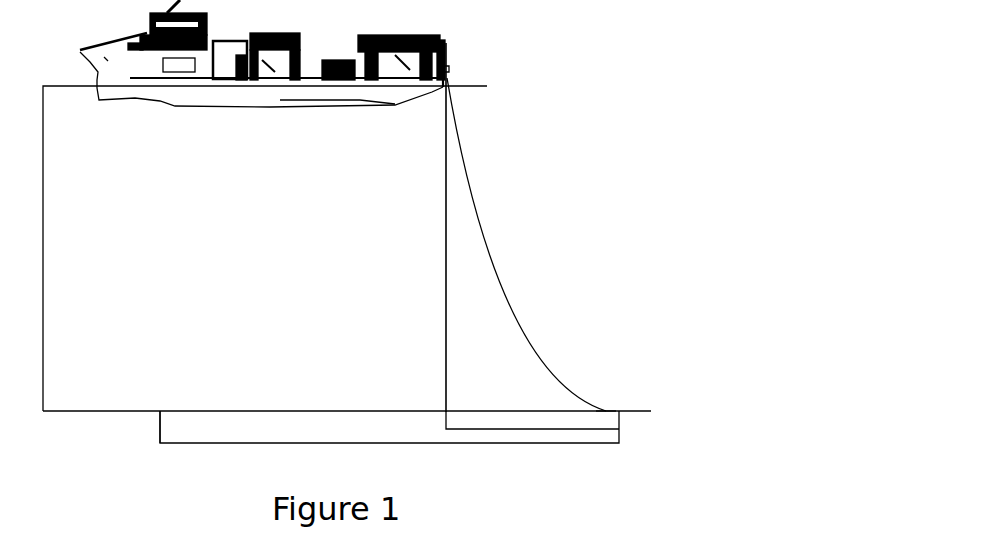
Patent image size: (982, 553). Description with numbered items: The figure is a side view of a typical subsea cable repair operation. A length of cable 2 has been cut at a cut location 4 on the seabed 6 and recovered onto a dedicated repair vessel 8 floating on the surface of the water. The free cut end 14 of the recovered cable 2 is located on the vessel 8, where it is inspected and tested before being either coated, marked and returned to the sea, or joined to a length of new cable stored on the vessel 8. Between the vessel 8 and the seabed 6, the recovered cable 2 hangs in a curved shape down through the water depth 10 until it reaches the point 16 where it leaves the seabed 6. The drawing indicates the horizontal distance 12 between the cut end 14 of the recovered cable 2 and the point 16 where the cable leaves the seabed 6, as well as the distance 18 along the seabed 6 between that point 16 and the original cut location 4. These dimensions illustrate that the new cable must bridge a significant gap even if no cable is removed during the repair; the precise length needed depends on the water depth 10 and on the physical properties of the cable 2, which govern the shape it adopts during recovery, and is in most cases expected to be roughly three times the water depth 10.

The cable 2 is at (496, 241).
The cut location 4 is at (160, 411).
The seabed 6 is at (232, 411).
The repair vessel 8 is at (87, 55).
The water depth 10 is at (43, 207).
The horizontal distance 12 is at (531, 429).
The cut end 14 is at (452, 67).
The point where the recovered cable leaves the seabed 16 is at (606, 411).
The distance 18 is at (396, 443).